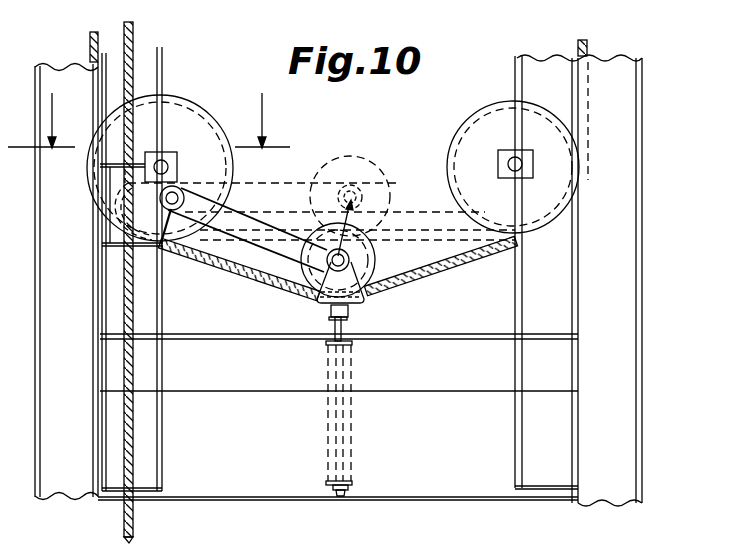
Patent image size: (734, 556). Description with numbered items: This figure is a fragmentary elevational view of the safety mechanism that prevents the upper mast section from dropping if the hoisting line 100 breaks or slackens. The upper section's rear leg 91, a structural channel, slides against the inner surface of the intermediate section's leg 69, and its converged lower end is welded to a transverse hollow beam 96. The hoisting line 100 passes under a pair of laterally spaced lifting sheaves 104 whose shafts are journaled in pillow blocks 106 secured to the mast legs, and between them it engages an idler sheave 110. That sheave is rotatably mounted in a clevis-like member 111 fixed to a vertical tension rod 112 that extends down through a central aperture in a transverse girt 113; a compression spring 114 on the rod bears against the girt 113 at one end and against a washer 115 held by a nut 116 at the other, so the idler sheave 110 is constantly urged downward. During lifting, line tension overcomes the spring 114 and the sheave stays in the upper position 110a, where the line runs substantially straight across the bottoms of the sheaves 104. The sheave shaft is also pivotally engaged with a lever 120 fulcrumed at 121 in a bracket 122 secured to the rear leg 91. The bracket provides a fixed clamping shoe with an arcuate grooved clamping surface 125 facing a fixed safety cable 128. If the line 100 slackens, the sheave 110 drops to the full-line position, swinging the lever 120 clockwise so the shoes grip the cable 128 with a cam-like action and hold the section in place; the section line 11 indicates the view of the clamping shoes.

The section line 11 is at (149, 120).
The rear leg of intermediate section 69 is at (48, 399).
The rear leg 91 is at (143, 427).
The transverse hollow beam 96 is at (258, 490).
The hoisting line 100 is at (89, 42).
The lifting sheaves 104 is at (172, 107).
The pillow blocks 106 is at (163, 158).
The idler sheave 110 is at (364, 248).
The upper position of idler sheave 110a is at (360, 172).
The clevis-like member 111 is at (366, 302).
The tension rod 112 is at (333, 326).
The transverse girt 113 is at (412, 347).
The compression spring 114 is at (351, 422).
The washer 115 is at (352, 482).
The nut 116 is at (348, 491).
The lever 120 is at (243, 230).
The fulcrum 121 is at (181, 184).
The bracket 122 is at (164, 247).
The arcuate grooved clamping surface 125 is at (113, 212).
The safety cable 128 is at (134, 40).